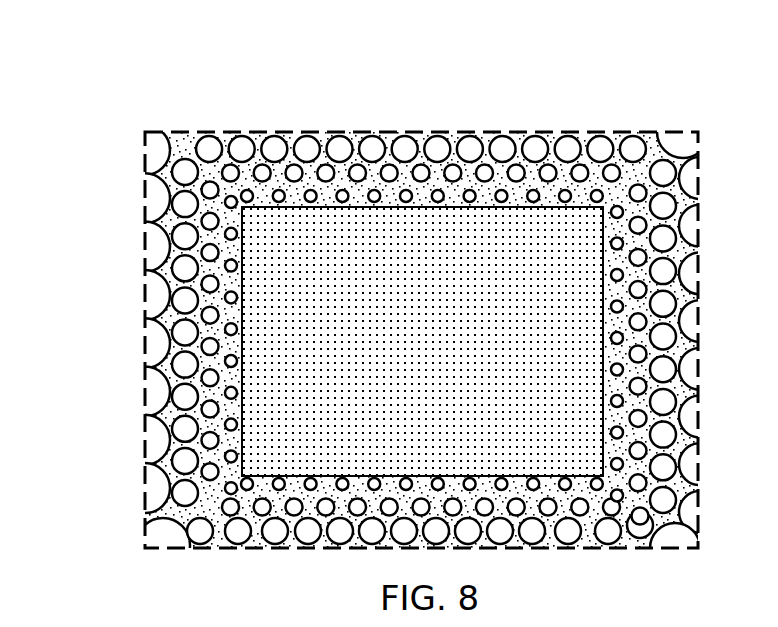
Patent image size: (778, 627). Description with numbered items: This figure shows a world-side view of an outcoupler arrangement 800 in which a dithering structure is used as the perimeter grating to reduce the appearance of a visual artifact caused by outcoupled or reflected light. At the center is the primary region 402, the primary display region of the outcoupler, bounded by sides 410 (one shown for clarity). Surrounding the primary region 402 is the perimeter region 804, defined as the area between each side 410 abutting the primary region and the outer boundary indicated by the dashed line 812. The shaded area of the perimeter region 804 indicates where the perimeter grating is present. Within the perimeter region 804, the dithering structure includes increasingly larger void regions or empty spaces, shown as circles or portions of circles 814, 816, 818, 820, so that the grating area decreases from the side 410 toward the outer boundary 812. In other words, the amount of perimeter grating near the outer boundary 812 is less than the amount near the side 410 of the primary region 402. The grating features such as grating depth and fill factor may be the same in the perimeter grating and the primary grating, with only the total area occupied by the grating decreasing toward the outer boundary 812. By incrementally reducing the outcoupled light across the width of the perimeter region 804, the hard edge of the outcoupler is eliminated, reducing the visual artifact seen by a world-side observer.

The perimeter region with dithering structure 800 is at (395, 298).
The outer boundary 812 is at (495, 124).
The largest void regions 820 is at (152, 343).
The large void regions 818 is at (192, 361).
The medium void regions 816 is at (214, 380).
The small void regions 814 is at (235, 427).
The perimeter region 804 is at (168, 444).
The side 410 is at (242, 343).
The primary region 402 is at (447, 357).